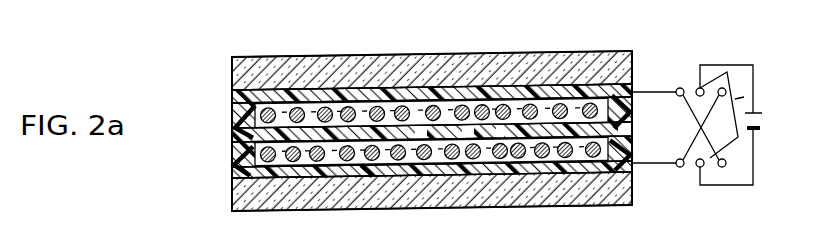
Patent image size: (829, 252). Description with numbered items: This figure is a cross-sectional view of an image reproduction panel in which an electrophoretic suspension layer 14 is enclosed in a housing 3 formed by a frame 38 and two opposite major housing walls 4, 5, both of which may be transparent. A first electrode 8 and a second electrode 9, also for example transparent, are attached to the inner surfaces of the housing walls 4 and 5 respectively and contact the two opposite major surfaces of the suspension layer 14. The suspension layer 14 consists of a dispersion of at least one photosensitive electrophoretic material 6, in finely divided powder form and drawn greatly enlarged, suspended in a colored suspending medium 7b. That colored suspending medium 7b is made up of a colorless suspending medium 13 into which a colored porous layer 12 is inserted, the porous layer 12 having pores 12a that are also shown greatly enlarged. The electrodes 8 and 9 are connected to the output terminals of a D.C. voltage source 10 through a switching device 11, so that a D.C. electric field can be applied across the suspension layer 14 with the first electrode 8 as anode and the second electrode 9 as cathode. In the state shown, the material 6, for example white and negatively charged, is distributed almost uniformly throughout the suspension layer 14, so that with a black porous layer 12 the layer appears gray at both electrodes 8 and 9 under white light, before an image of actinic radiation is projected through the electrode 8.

The housing 3 is at (228, 50).
The major housing wall 4 is at (242, 71).
The major housing wall 5 is at (242, 193).
The first electrode 8 is at (242, 96).
The second electrode 9 is at (242, 170).
The frame 38 is at (234, 159).
The colored porous layer 12 is at (441, 138).
The pores 12a is at (447, 133).
The colorless suspending medium 13 is at (407, 156).
The electrophoretic suspension layer 14 is at (366, 165).
The photosensitive electrophoretic material 6 is at (357, 164).
The colored suspending medium 7b is at (530, 158).
The switching device 11 is at (681, 87).
The D.C. voltage source 10 is at (757, 113).